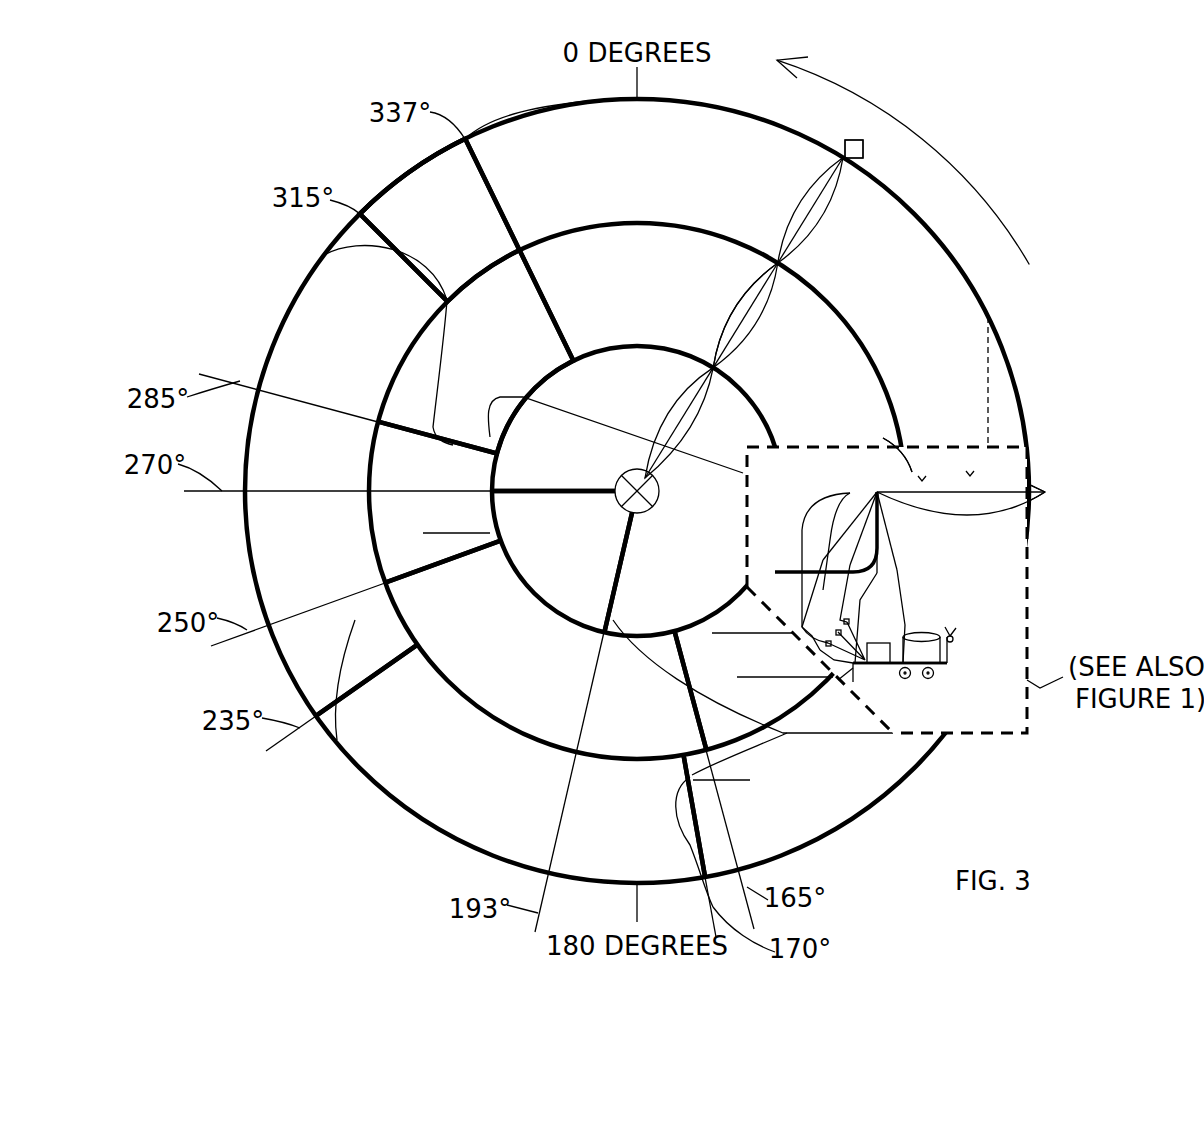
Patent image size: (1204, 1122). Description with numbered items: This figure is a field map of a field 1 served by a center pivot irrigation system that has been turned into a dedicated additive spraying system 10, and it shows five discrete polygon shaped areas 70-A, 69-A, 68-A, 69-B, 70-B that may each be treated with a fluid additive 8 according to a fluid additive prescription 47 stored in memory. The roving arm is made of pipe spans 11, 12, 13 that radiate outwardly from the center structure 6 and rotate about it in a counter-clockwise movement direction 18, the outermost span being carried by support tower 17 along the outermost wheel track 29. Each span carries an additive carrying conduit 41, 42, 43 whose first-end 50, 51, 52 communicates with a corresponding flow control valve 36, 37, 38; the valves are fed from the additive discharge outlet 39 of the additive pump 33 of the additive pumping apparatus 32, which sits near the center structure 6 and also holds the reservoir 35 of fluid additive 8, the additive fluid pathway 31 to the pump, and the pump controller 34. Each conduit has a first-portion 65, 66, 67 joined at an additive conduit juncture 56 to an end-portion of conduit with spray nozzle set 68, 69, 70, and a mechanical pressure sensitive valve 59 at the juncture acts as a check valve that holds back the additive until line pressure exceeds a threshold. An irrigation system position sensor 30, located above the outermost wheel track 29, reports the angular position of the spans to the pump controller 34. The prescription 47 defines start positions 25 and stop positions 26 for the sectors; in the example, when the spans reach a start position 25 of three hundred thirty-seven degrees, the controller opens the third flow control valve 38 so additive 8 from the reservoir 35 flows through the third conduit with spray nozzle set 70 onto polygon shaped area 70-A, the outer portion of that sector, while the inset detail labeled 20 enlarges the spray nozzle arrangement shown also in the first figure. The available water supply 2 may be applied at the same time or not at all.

The field 1 is at (593, 497).
The available water supply 2 is at (787, 570).
The center structure 6 is at (887, 537).
The fluid additive 8 is at (948, 663).
The dedicated additive spraying system 10 is at (740, 357).
The pipe span 11 is at (698, 427).
The pipe span 12 is at (750, 337).
The pipe span 13 is at (823, 222).
The support tower 17 is at (858, 160).
The counter-clockwise movement direction 18 is at (900, 119).
The lens element 20 is at (912, 475).
The start position 25 is at (490, 192).
The stop position 26 is at (413, 267).
The wheel track 29 is at (703, 102).
The irrigation system position sensor 30 is at (851, 140).
The additive fluid pathway 31 is at (898, 668).
The additive pumping apparatus 32 is at (929, 679).
The additive pump 33 is at (878, 664).
The pump controller 34 is at (895, 640).
The reservoir 35 is at (952, 638).
The flow control valve 36 is at (828, 642).
The flow control valve 37 is at (838, 679).
The third flow control valve 38 is at (850, 684).
The additive discharge outlet 39 is at (857, 667).
The additive carrying conduit 41 is at (785, 623).
The additive carrying conduit 42 is at (832, 589).
The additive carrying conduit 43 is at (862, 591).
The fluid additive prescription 47 is at (413, 167).
The first-end of additive carrying conduit 50 is at (810, 644).
The first-end of additive carrying conduit 51 is at (840, 627).
The first-end of additive carrying conduit 52 is at (850, 622).
The additive conduit juncture 56 is at (883, 438).
The mechanical pressure sensitive valve 59 is at (897, 455).
The first-portion of additive carrying conduit 65 is at (850, 493).
The first-portion of additive carrying conduit 66 is at (960, 493).
The first-portion of additive carrying conduit 67 is at (857, 533).
The end-portion of conduit with spray nozzle set 68 is at (690, 414).
The end-portion of conduit with spray nozzle set 69 is at (757, 297).
The end-portion of third conduit with spray nozzle set 70 is at (818, 205).
The polygon shaped area 70-A is at (440, 220).
The polygon shaped area 69-A is at (475, 351).
The polygon shaped area 68-A is at (562, 561).
The polygon shaped area 69-B is at (545, 645).
The polygon shaped area 70-B is at (510, 761).